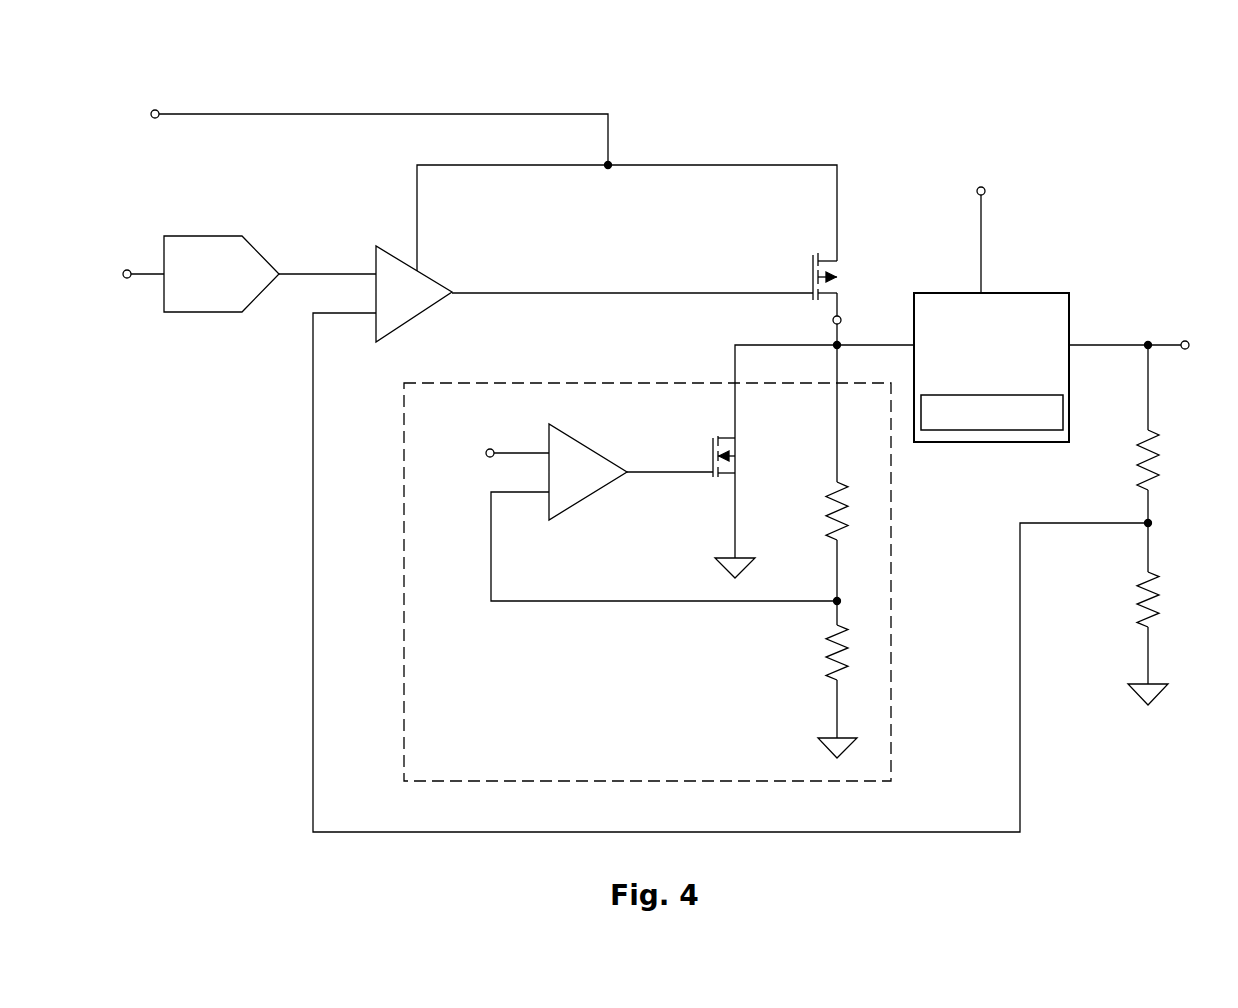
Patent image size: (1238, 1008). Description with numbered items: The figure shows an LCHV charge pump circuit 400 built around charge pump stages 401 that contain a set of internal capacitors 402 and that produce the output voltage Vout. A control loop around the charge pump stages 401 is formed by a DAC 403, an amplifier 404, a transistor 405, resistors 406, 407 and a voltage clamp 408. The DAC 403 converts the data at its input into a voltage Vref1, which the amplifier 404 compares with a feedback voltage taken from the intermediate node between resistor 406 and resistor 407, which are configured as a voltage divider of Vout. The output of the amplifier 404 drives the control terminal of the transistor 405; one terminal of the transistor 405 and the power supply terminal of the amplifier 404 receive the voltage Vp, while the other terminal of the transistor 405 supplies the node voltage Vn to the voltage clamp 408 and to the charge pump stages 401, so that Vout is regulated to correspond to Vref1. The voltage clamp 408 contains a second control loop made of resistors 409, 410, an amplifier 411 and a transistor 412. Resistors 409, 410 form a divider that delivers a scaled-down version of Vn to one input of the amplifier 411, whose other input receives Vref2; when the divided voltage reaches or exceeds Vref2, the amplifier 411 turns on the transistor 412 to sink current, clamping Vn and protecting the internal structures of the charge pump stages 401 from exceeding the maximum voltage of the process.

The LCHV charge pump circuit 400 is at (1122, 141).
The charge pump stages 401 is at (1001, 368).
The internal capacitors 402 is at (1005, 431).
The DAC 403 is at (203, 236).
The amplifier 404 is at (427, 278).
The transistor 405 is at (843, 266).
The resistor 406 is at (1164, 459).
The resistor 407 is at (1164, 600).
The voltage clamp 408 is at (595, 383).
The resistor 409 is at (853, 515).
The resistor 410 is at (853, 657).
The amplifier 411 is at (582, 500).
The transistor 412 is at (704, 451).